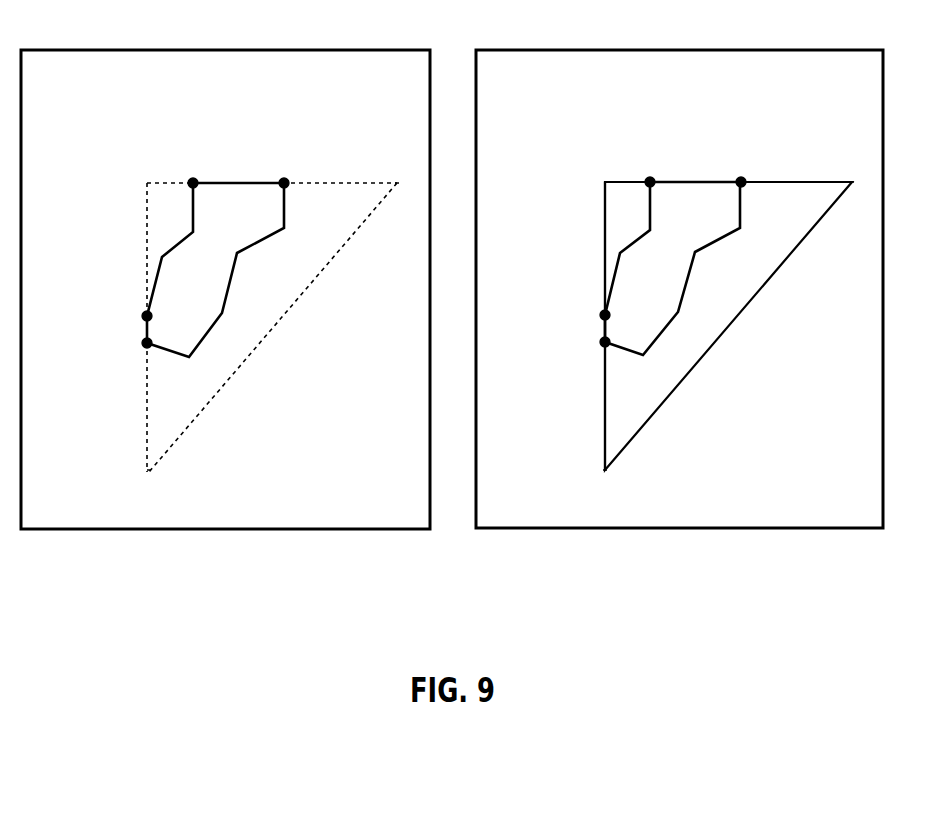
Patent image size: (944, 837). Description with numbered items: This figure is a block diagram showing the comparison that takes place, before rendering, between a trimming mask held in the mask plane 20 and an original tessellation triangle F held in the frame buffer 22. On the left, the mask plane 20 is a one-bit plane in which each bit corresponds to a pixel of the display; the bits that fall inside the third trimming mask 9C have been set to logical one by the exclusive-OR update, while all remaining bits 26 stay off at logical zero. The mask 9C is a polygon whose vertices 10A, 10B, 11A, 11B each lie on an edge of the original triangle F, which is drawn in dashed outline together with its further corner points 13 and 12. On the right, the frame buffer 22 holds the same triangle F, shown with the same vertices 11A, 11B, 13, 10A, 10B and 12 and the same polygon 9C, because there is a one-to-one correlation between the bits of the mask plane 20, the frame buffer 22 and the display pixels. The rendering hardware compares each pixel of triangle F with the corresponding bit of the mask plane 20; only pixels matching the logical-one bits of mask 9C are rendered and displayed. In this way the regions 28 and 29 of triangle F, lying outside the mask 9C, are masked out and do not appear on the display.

The mask plane 20 is at (130, 50).
The frame buffer 22 is at (583, 48).
The remaining bits of mask plane 26 is at (71, 172).
The region to be trimmed 29 is at (615, 220).
The masked region 28 is at (698, 297).
The triangle F is at (242, 298).
The third trimming mask 9C is at (208, 303).
The vertex 11A is at (193, 183).
The vertex 11B is at (284, 183).
The vertex 13 is at (397, 182).
The vertex 10A is at (147, 316).
The vertex 10B is at (147, 343).
The vertex 12 is at (149, 478).